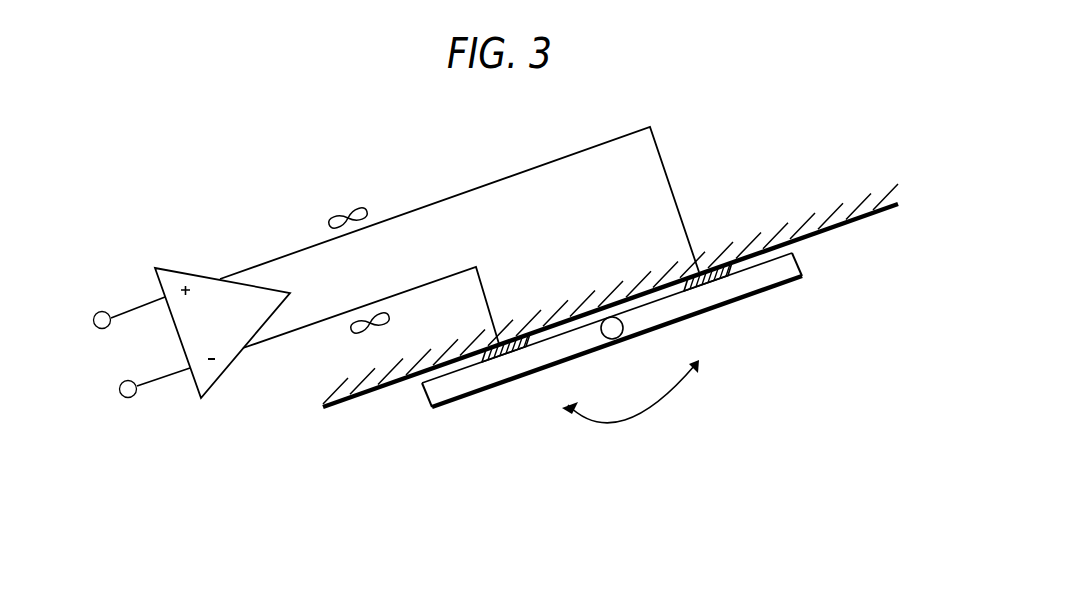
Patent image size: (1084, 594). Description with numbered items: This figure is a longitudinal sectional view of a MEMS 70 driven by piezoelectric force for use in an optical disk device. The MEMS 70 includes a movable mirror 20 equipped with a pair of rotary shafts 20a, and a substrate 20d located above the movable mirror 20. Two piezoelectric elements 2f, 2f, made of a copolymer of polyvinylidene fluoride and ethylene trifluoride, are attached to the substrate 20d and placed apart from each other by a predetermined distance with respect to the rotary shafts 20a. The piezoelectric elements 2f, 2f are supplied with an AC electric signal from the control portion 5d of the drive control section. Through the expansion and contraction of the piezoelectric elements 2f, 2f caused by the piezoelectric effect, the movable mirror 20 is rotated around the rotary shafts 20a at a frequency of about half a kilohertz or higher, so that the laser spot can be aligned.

The control portion 5d is at (188, 271).
The MEMS 70 is at (379, 405).
The substrate 20d is at (858, 205).
The movable mirror 20 is at (758, 283).
The rotary shaft 20a is at (607, 320).
The piezoelectric element 2f is at (490, 346).